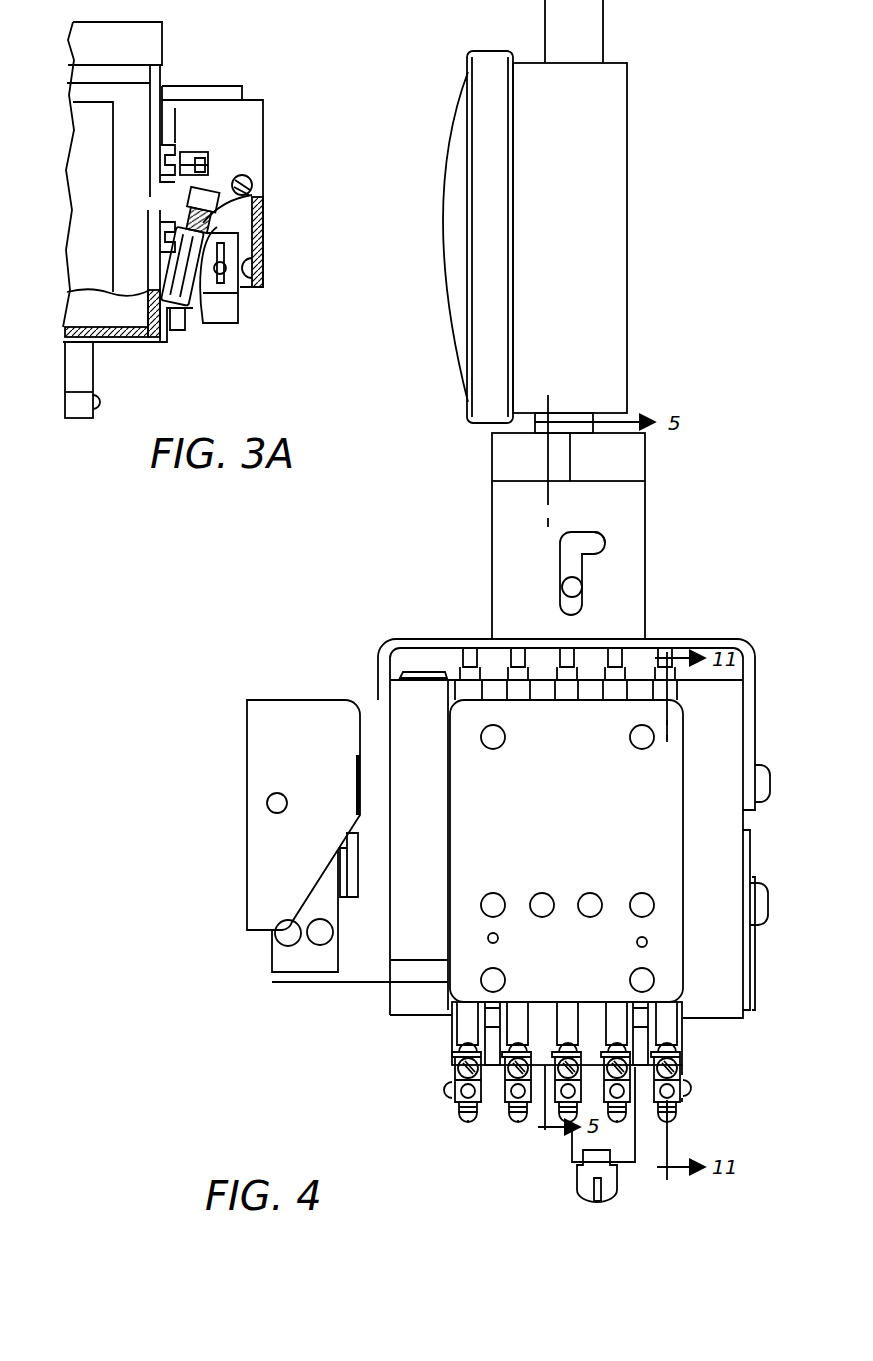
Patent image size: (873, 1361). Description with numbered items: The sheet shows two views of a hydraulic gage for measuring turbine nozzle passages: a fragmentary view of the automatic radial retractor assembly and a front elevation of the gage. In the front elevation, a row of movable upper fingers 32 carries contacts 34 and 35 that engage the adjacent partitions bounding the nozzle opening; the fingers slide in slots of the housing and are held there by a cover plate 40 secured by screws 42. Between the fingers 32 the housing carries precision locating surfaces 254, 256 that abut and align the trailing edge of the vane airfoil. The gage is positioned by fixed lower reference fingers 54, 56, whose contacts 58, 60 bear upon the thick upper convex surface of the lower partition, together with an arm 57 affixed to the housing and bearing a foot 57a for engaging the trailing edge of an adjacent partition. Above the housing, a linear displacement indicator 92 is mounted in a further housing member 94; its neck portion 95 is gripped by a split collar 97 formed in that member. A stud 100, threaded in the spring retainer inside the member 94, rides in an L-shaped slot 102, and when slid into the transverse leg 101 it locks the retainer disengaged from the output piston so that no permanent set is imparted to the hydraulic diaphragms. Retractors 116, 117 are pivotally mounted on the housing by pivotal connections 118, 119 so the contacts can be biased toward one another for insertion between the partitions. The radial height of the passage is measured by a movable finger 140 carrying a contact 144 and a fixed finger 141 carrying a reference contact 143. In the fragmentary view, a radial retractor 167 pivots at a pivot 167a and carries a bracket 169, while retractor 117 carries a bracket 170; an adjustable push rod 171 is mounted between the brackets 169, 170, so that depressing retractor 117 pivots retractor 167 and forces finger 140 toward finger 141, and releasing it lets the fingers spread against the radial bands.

In FIG. 4, the movable upper finger 32 is at (462, 1028).
In FIG. 4, the contact 34 is at (617, 1050).
In FIG. 4, the contact 35 is at (518, 1122).
In FIG. 4, the cover plate 40 is at (594, 843).
In FIG. 4, the screw 42 is at (497, 746).
In FIG. 4, the fixed lower reference finger 54 is at (690, 1103).
In FIG. 4, the fixed lower reference finger 56 is at (483, 1106).
In FIG. 4, the arm 57 is at (578, 1146).
In FIG. 4, the foot 57a is at (617, 1194).
In FIG. 4, the contact 58 is at (676, 1118).
In FIG. 4, the contact 60 is at (472, 1122).
In FIG. 4, the linear displacement indicator 92 is at (445, 205).
In FIG. 4, the housing member 94 is at (493, 545).
In FIG. 4, the neck portion 95 is at (535, 421).
In FIG. 4, the split collar 97 is at (503, 447).
In FIG. 4, the stud 100 is at (582, 587).
In FIG. 4, the transverse leg 101 is at (603, 538).
In FIG. 4, the L-shaped slot 102 is at (567, 565).
In FIG. 4, the retractor 116 is at (418, 641).
In FIG. 3A, the retractor 117 is at (128, 345).
In FIG. 4, the pivotal connection 118 is at (771, 795).
In FIG. 4, the pivotal connection 119 is at (770, 905).
In FIG. 3A, the movable finger 140 is at (72, 367).
In FIG. 4, the fixed finger 141 is at (688, 1073).
In FIG. 4, the contact 143 is at (696, 1092).
In FIG. 3A, the contact 144 is at (101, 404).
In FIG. 4, the contact 144 is at (446, 1092).
In FIG. 3A, the radial retractor 167 is at (260, 112).
In FIG. 4, the radial retractor 167 is at (253, 735).
In FIG. 3A, the pivot 167a is at (254, 190).
In FIG. 4, the pivot 167a is at (268, 806).
In FIG. 3A, the bracket 169 is at (205, 153).
In FIG. 3A, the bracket 170 is at (190, 318).
In FIG. 3A, the adjustable push rod 171 is at (178, 265).
In FIG. 4, the precision locating surface 254 is at (497, 1042).
In FIG. 4, the precision locating surface 256 is at (642, 1042).